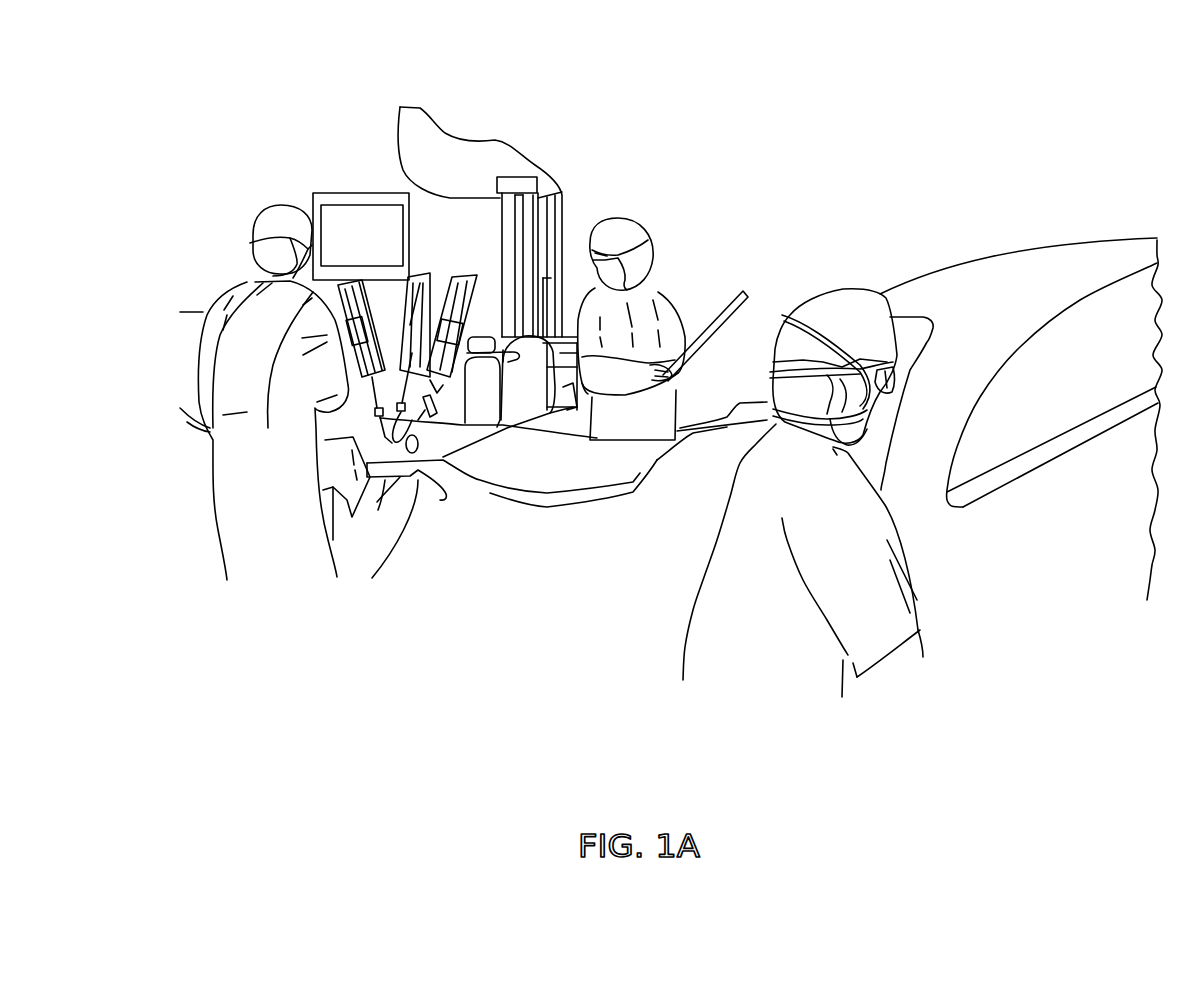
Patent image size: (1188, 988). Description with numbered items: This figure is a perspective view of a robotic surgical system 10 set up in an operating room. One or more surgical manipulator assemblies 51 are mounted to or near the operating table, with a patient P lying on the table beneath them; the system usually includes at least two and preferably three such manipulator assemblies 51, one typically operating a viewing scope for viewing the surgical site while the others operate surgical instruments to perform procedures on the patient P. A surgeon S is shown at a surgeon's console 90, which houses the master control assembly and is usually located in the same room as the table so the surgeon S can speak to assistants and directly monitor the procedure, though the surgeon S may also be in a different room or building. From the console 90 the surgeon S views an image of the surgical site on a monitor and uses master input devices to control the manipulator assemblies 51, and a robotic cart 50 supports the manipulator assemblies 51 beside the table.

The robotic surgical system 10 is at (722, 71).
The robotic cart 50 is at (530, 170).
The surgical manipulator assembly 51 is at (472, 283).
The surgeon's console 90 is at (1027, 247).
The patient P is at (467, 437).
The surgeon S is at (707, 613).